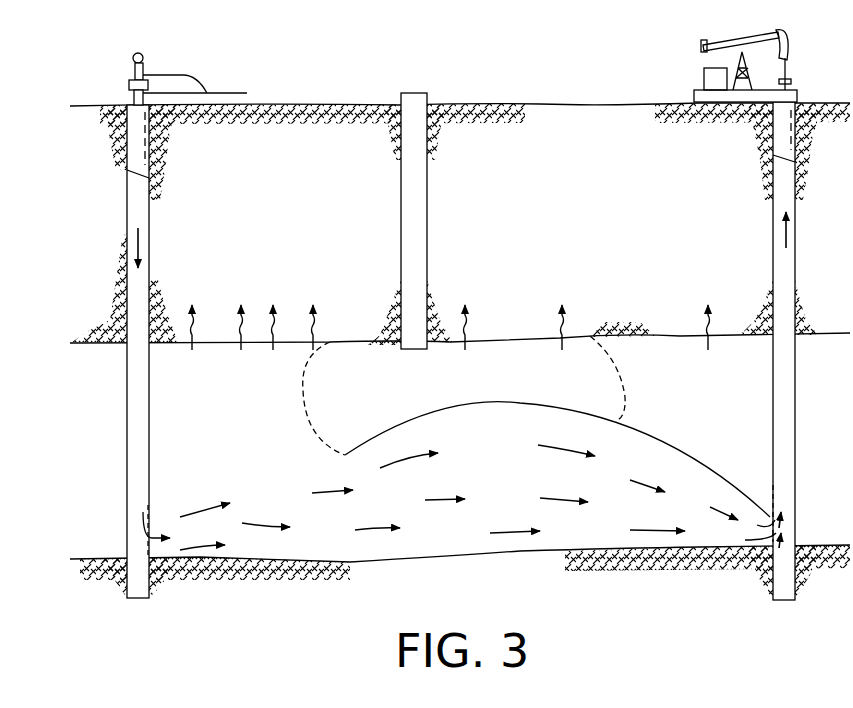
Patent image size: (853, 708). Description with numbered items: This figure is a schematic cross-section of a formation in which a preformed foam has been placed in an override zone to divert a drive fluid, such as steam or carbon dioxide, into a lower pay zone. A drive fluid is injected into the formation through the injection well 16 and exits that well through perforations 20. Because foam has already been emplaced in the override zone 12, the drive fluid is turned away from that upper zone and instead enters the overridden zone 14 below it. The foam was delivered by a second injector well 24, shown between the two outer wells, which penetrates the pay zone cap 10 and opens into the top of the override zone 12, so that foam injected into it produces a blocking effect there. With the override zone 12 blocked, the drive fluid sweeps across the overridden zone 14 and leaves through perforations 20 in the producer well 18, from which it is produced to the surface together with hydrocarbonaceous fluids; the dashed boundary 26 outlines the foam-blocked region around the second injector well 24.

The upper formation 10 is at (526, 197).
The lower formation (oil-bearing) 12 is at (706, 390).
The oil bank / flow region 14 is at (509, 468).
The injection well 16 is at (127, 163).
The production well 18 is at (790, 155).
The perforations 20 is at (140, 507).
The conduit 24 is at (428, 100).
The heated zone boundary 26 is at (302, 400).